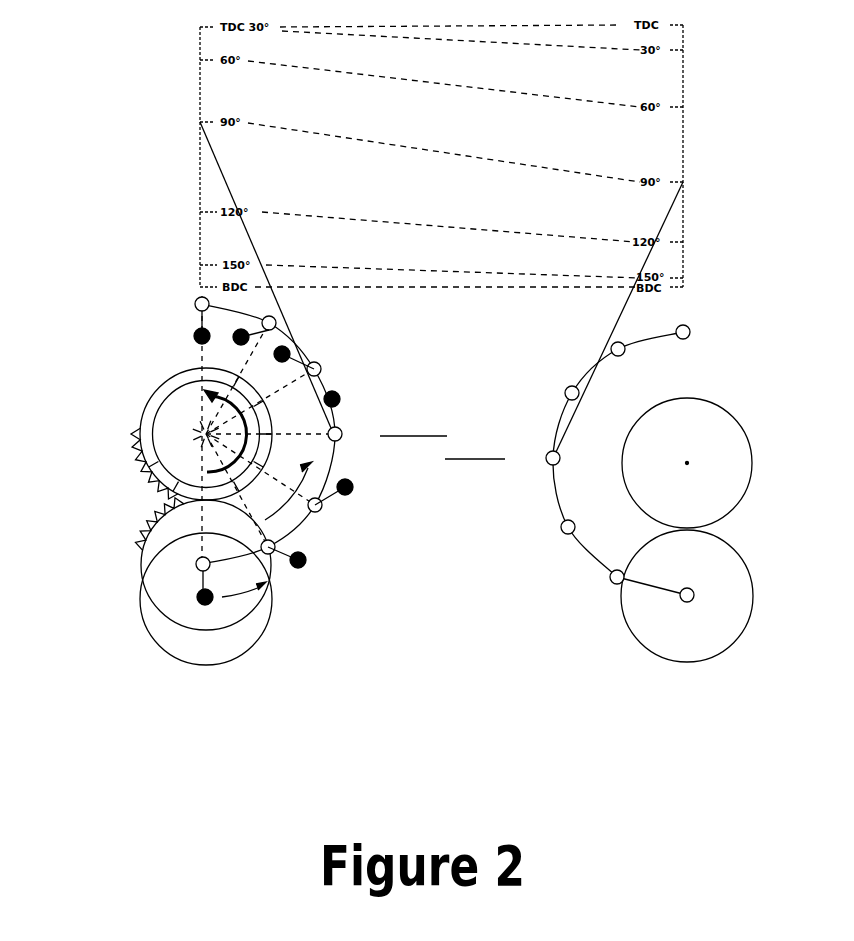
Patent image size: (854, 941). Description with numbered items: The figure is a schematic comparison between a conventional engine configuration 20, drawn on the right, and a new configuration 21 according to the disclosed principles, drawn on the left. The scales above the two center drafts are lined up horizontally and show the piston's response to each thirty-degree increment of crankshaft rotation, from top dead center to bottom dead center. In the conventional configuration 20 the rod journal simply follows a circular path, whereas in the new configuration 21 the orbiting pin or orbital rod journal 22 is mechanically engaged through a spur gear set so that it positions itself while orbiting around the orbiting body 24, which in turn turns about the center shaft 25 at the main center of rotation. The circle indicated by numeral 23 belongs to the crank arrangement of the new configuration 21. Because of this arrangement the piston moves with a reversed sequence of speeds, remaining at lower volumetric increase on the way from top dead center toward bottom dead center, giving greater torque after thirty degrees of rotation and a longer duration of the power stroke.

The conventional engine configuration 20 is at (808, 682).
The new engine configuration 21 is at (337, 682).
The orbital rod journal 22 is at (194, 333).
The crankshaft circle 23 is at (167, 605).
The orbiting body 24 is at (196, 299).
The center shaft 25 is at (206, 434).